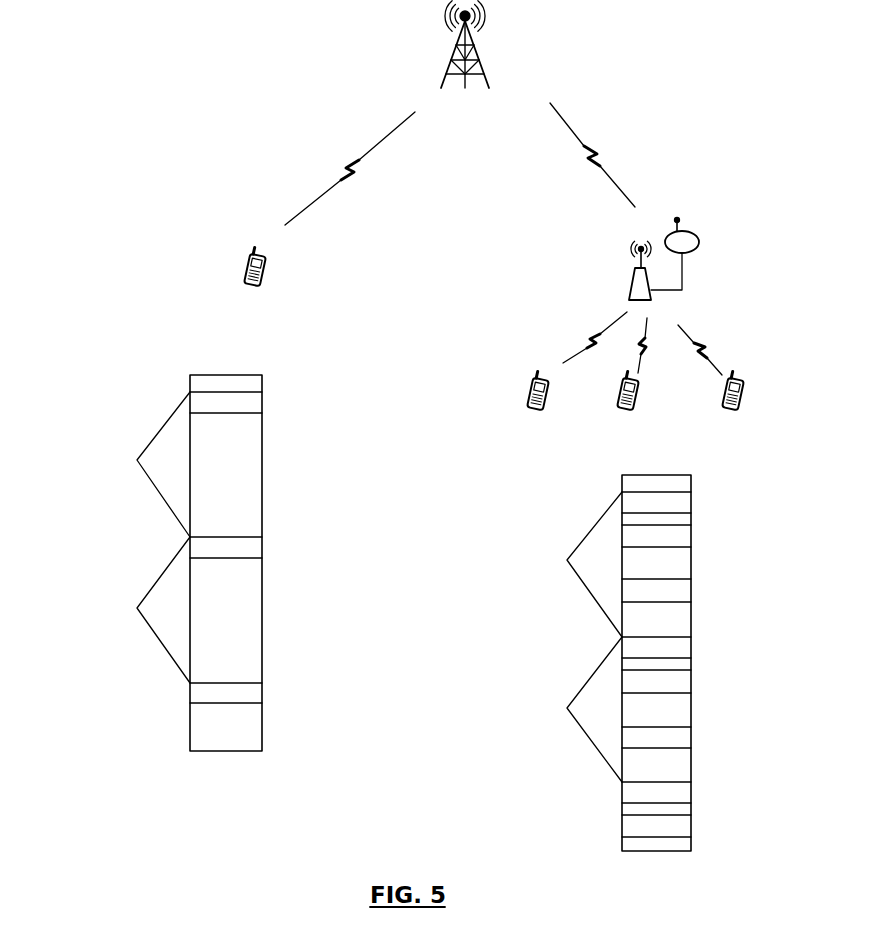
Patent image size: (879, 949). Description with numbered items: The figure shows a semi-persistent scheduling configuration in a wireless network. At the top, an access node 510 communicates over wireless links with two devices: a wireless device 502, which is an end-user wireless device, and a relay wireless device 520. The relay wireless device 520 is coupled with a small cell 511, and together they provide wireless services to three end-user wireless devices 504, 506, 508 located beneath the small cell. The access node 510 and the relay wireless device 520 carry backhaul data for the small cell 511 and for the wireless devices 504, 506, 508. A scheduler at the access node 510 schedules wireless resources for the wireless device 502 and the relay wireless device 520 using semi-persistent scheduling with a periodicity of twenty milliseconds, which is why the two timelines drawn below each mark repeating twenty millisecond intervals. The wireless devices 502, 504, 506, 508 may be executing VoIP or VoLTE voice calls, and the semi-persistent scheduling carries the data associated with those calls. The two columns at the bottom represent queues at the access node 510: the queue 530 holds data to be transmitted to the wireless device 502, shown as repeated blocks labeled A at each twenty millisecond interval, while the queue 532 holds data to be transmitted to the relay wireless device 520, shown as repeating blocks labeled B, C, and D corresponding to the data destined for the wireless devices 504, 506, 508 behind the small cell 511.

The access node 510 is at (465, 86).
The wireless device 502 is at (282, 290).
The small cell 511 is at (638, 267).
The relay wireless device 520 is at (688, 233).
The wireless device 504 is at (533, 412).
The wireless device 506 is at (623, 412).
The wireless device 508 is at (728, 412).
The queue 530 is at (262, 460).
The queue 532 is at (691, 522).